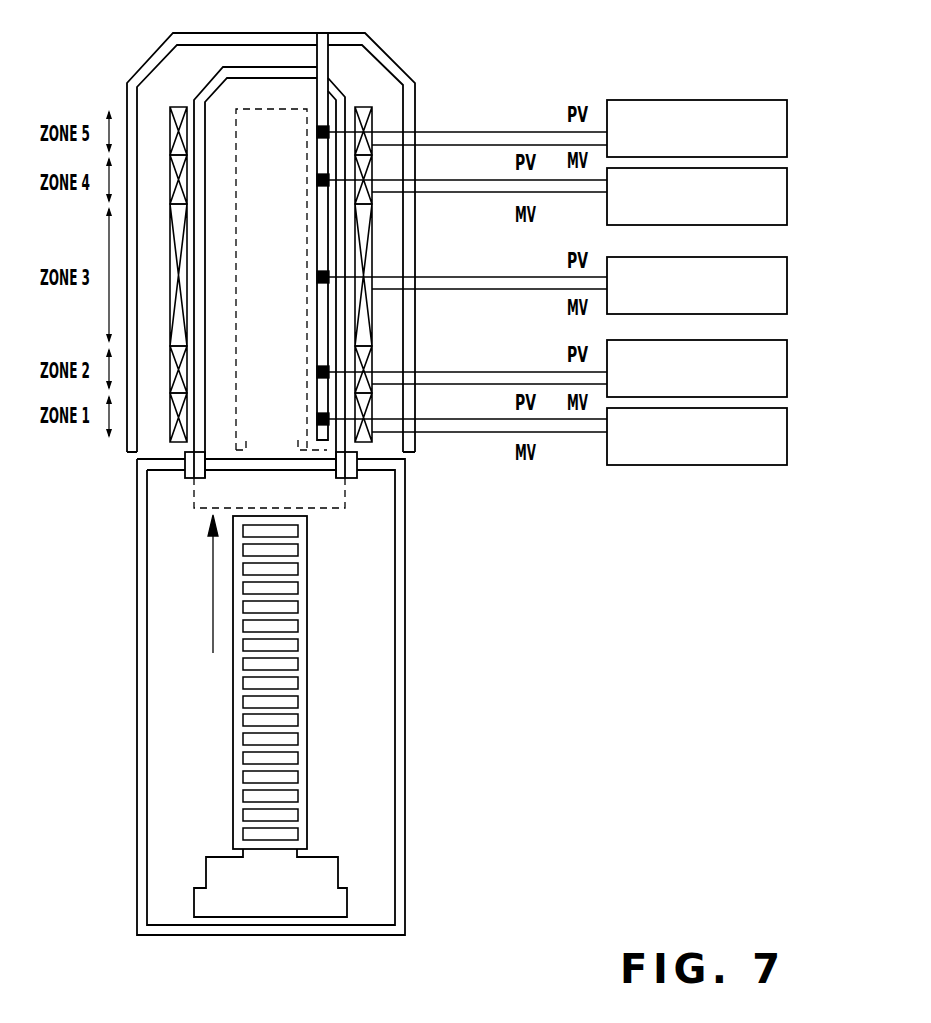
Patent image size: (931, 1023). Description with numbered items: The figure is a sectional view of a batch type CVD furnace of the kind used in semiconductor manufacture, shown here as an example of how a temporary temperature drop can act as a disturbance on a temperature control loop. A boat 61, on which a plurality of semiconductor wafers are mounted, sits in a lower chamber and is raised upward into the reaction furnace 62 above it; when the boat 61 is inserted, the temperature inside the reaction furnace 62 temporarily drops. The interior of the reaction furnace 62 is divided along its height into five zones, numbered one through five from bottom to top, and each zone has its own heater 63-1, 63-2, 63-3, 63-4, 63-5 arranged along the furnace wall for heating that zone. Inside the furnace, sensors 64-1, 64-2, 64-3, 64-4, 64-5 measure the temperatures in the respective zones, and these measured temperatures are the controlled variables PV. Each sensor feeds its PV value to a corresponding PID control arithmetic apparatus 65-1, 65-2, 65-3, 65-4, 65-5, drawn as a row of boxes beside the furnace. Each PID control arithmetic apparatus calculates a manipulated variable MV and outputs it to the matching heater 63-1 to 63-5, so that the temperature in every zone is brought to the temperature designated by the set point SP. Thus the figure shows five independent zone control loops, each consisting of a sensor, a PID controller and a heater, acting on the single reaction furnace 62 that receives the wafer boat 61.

The boat 61 is at (308, 695).
The reaction furnace 62 is at (214, 79).
The heater 63-1 is at (372, 439).
The heater 63-2 is at (372, 360).
The heater 63-3 is at (372, 270).
The heater 63-4 is at (372, 198).
The heater 63-5 is at (372, 119).
The sensor 64-1 is at (316, 419).
The sensor 64-2 is at (316, 372).
The sensor 64-3 is at (316, 277).
The sensor 64-4 is at (316, 181).
The sensor 64-5 is at (316, 133).
The PID control arithmetic apparatus 65-1 is at (787, 430).
The PID control arithmetic apparatus 65-2 is at (787, 362).
The PID control arithmetic apparatus 65-3 is at (787, 279).
The PID control arithmetic apparatus 65-4 is at (787, 190).
The PID control arithmetic apparatus 65-5 is at (787, 122).